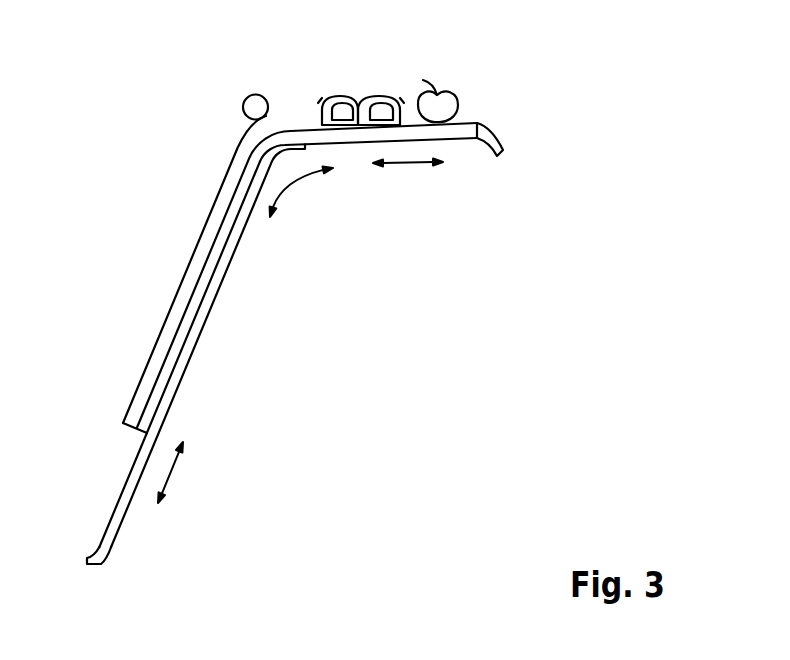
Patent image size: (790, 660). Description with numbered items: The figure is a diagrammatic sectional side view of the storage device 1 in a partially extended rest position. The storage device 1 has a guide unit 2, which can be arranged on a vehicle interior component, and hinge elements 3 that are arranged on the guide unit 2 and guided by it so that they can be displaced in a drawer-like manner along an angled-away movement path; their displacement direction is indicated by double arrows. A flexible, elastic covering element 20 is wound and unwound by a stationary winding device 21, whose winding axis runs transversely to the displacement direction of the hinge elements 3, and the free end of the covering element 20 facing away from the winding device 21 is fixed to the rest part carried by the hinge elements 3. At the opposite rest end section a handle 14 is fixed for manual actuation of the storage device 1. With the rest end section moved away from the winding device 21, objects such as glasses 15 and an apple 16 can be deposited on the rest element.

The storage device 1 is at (189, 114).
The guide unit 2 is at (210, 307).
The hinge elements 3 is at (195, 300).
The handle 14 is at (494, 142).
The glasses 15 is at (350, 96).
The apple 16 is at (451, 93).
The covering element 20 is at (198, 243).
The winding device 21 is at (254, 107).